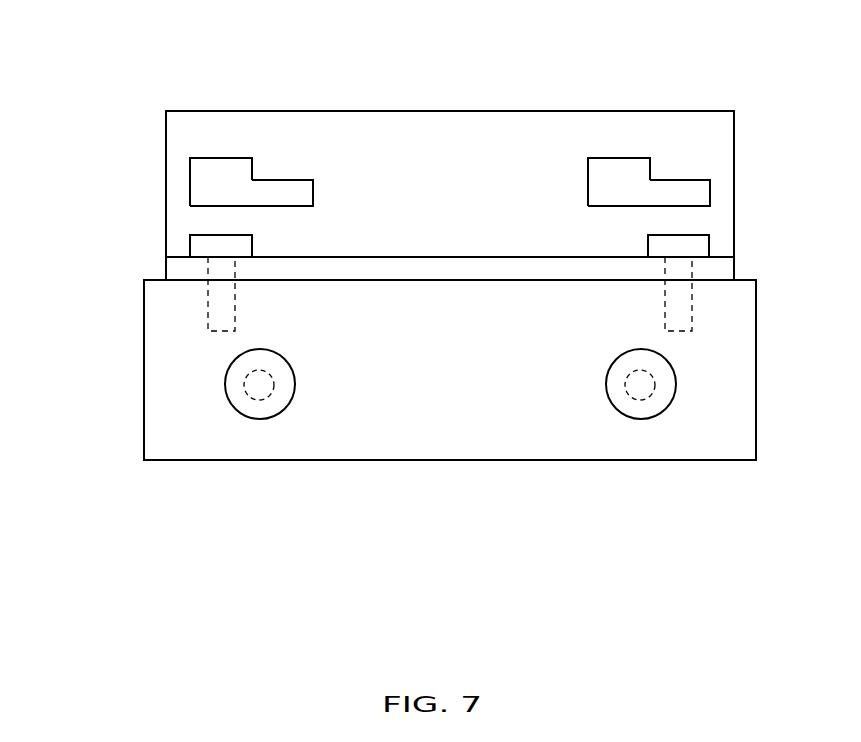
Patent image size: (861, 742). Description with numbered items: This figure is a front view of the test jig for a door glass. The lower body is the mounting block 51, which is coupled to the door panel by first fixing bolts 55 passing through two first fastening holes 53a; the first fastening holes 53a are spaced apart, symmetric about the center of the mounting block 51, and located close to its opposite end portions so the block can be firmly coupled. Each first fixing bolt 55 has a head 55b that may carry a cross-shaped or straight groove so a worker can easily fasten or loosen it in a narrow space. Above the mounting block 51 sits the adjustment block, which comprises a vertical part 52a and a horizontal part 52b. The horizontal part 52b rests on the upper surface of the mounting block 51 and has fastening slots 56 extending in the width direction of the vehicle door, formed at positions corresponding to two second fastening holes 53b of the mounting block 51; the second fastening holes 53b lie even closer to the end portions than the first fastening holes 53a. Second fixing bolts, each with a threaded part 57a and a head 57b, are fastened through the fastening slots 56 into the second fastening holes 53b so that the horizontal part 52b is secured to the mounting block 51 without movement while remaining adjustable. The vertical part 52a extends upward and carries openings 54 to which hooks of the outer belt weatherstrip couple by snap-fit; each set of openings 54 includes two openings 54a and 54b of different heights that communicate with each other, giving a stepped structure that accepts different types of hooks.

The mounting block 51 is at (750, 360).
The vertical part 52a is at (728, 221).
The horizontal part 52b is at (728, 272).
The first fastening holes 53a is at (257, 382).
The second fastening holes 53b is at (211, 315).
The openings 54 is at (697, 50).
The opening 54a is at (222, 192).
The opening 54b is at (300, 195).
The first fixing bolt 55 is at (456, 431).
The head 55b is at (253, 410).
The fastening slots 56 is at (218, 270).
The threaded part 57a is at (665, 300).
The head 57b is at (648, 247).